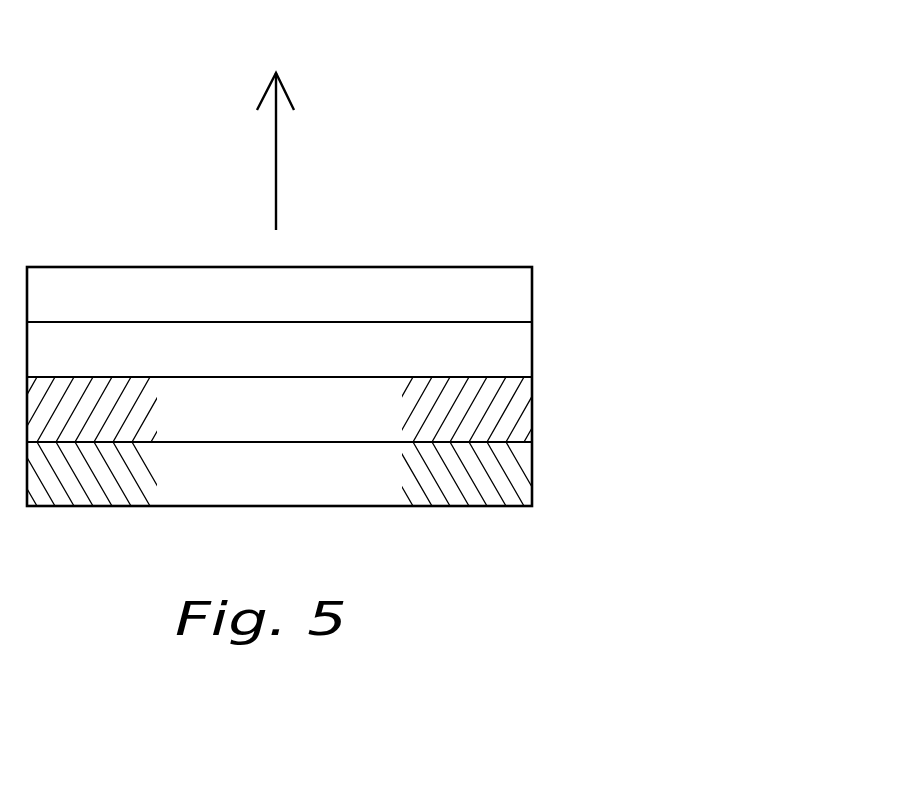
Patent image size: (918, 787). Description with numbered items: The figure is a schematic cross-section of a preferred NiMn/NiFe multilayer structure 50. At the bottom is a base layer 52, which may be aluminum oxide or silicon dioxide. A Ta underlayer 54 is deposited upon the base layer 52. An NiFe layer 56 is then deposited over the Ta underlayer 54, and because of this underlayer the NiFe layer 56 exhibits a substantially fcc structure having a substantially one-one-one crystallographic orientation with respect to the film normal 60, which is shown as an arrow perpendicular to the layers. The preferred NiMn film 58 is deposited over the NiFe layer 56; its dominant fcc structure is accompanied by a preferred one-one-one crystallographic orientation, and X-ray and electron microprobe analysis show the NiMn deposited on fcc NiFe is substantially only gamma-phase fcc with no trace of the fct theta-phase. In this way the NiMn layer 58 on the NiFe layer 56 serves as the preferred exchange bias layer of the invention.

The layered magnetoresistive structure 50 is at (448, 86).
The base layer 52 is at (520, 488).
The Ta underlayer 54 is at (518, 403).
The NiFe layer 56 is at (500, 338).
The NiMn layer 58 is at (441, 287).
The film normal 60 is at (276, 200).